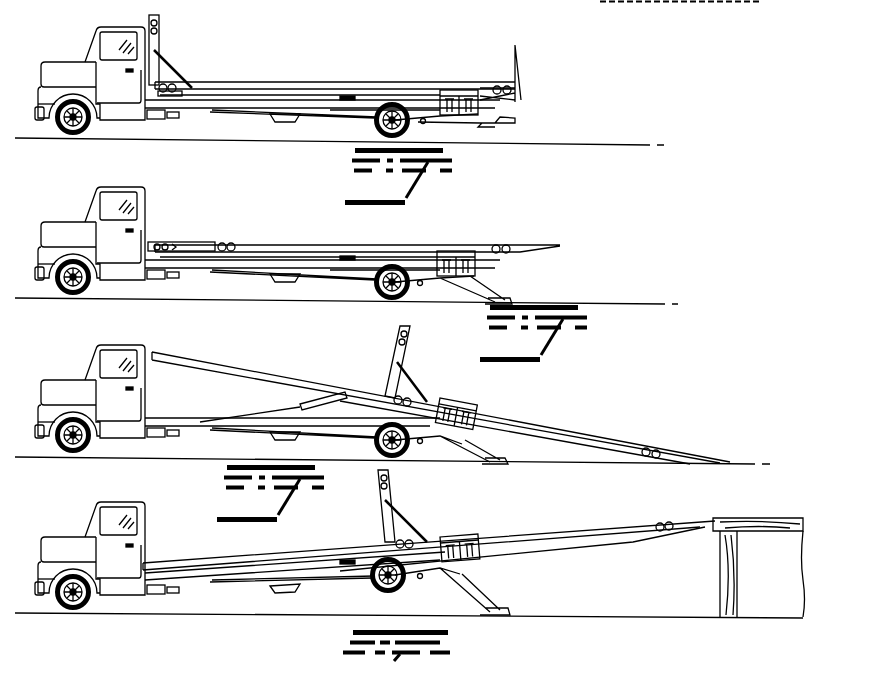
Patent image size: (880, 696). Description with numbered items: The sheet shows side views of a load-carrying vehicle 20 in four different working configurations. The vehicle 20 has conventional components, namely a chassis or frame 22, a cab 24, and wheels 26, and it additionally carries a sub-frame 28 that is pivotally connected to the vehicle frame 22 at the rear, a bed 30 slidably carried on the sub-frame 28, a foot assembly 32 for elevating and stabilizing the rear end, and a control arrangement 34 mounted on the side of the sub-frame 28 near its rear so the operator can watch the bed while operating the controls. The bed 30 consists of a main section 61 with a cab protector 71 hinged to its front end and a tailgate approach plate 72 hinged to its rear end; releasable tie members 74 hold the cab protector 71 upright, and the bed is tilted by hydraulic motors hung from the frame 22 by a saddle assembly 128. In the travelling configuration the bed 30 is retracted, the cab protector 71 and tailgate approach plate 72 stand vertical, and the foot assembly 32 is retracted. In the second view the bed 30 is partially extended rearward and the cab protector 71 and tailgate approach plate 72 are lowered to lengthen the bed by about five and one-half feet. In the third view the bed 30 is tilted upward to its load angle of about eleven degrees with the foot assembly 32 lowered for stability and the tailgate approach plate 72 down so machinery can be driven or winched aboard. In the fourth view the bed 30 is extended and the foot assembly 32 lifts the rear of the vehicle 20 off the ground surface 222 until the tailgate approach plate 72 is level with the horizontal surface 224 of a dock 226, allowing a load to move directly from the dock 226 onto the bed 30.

In FIG. 1, the load-carrying vehicle 20 is at (78, 22).
In FIG. 2, the load-carrying vehicle 20 is at (76, 180).
In FIG. 3, the load-carrying vehicle 20 is at (76, 342).
In FIG. 4, the load-carrying vehicle 20 is at (76, 498).
In FIG. 1, the chassis or frame 22 is at (226, 112).
In FIG. 2, the chassis or frame 22 is at (226, 272).
In FIG. 3, the chassis or frame 22 is at (218, 432).
In FIG. 4, the chassis or frame 22 is at (218, 582).
In FIG. 1, the cab 24 is at (92, 52).
In FIG. 2, the cab 24 is at (92, 214).
In FIG. 3, the cab 24 is at (92, 372).
In FIG. 4, the cab 24 is at (80, 534).
In FIG. 1, the wheels 26 is at (56, 130).
In FIG. 2, the wheels 26 is at (392, 282).
In FIG. 3, the wheels 26 is at (392, 440).
In FIG. 4, the wheels 26 is at (388, 575).
In FIG. 1, the sub-frame 28 is at (266, 82).
In FIG. 2, the sub-frame 28 is at (276, 246).
In FIG. 3, the sub-frame 28 is at (218, 360).
In FIG. 4, the sub-frame 28 is at (200, 558).
In FIG. 1, the bed 30 is at (342, 82).
In FIG. 2, the bed 30 is at (318, 244).
In FIG. 3, the bed 30 is at (556, 420).
In FIG. 4, the bed 30 is at (492, 528).
In FIG. 1, the foot assembly 32 is at (458, 120).
In FIG. 2, the foot assembly 32 is at (478, 292).
In FIG. 3, the foot assembly 32 is at (442, 446).
In FIG. 4, the foot assembly 32 is at (444, 592).
In FIG. 1, the control arrangement 34 is at (458, 90).
In FIG. 2, the control arrangement 34 is at (456, 263).
In FIG. 1, the main section 61 is at (310, 82).
In FIG. 2, the main section 61 is at (374, 244).
In FIG. 3, the main section 61 is at (502, 410).
In FIG. 4, the main section 61 is at (454, 536).
In FIG. 1, the cab protector 71 is at (159, 18).
In FIG. 2, the cab protector 71 is at (190, 242).
In FIG. 3, the cab protector 71 is at (410, 340).
In FIG. 4, the cab protector 71 is at (378, 496).
In FIG. 1, the tailgate approach plate 72 is at (518, 62).
In FIG. 2, the tailgate approach plate 72 is at (528, 246).
In FIG. 3, the tailgate approach plate 72 is at (708, 460).
In FIG. 4, the tailgate approach plate 72 is at (700, 516).
In FIG. 1, the releasable tie members 74 is at (178, 70).
In FIG. 1, the saddle assembly 128 is at (272, 122).
In FIG. 2, the saddle assembly 128 is at (285, 278).
In FIG. 3, the saddle assembly 128 is at (285, 436).
In FIG. 4, the saddle assembly 128 is at (285, 588).
In FIG. 4, the surface 222 is at (574, 614).
In FIG. 4, the horizontal surface 224 is at (752, 516).
In FIG. 4, the dock 226 is at (712, 546).